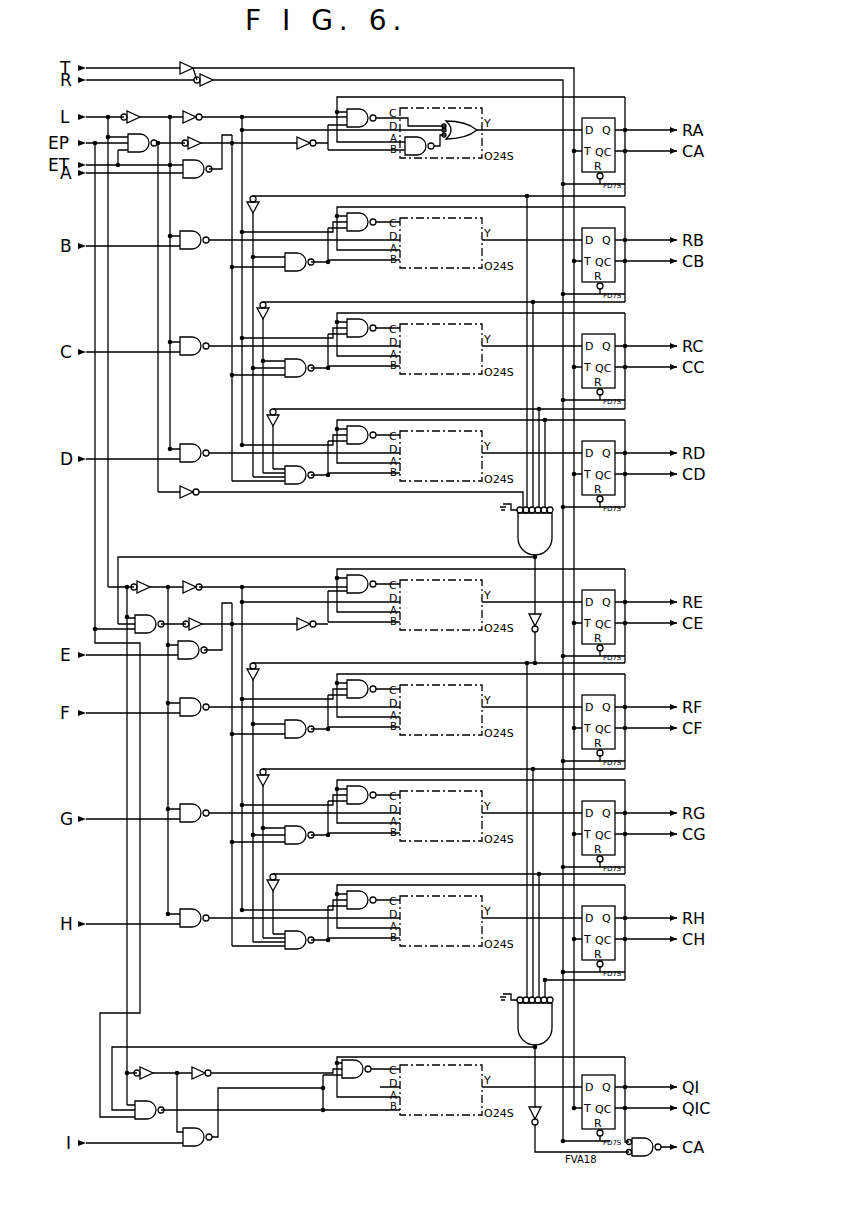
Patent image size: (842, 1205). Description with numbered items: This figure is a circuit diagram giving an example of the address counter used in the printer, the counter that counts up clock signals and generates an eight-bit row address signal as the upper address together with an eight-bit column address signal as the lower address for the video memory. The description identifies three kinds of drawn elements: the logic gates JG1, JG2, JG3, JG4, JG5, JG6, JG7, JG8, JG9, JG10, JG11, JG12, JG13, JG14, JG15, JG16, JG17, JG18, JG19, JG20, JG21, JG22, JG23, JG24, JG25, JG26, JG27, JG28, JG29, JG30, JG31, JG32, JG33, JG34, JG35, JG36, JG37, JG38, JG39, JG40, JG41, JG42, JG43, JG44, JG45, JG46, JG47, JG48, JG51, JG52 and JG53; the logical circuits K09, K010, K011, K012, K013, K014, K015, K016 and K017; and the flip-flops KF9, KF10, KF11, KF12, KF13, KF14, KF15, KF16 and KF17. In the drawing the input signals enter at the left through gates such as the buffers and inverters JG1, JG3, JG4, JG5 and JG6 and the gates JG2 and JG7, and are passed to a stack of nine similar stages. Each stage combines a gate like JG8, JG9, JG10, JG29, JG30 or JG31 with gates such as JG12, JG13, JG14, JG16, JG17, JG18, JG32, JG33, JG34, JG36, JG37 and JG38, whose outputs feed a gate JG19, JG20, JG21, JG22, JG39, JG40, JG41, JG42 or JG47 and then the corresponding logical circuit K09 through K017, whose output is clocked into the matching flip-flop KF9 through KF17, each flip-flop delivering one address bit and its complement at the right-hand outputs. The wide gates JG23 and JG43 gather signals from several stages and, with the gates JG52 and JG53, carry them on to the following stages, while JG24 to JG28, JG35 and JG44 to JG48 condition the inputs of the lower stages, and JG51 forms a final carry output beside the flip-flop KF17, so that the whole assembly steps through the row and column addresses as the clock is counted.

The logic gate JG1 is at (141, 113).
The logic gate JG2 is at (140, 144).
The logic gate JG3 is at (181, 61).
The logic gate JG4 is at (212, 80).
The logic gate JG5 is at (196, 113).
The logic gate JG6 is at (201, 139).
The logic gate JG7 is at (205, 163).
The logic gate JG8 is at (193, 240).
The logic gate JG9 is at (193, 346).
The logic gate JG10 is at (192, 453).
The logic gate JG11 is at (340, 490).
The logic gate JG12 is at (258, 199).
The logic gate JG13 is at (268, 305).
The logic gate JG14 is at (278, 412).
The logic gate JG15 is at (301, 142).
The logic gate JG16 is at (297, 264).
The logic gate JG17 is at (297, 370).
The logic gate JG18 is at (297, 477).
The logic gate JG19 is at (395, 118).
The logic gate JG20 is at (362, 222).
The logic gate JG21 is at (362, 328).
The logic gate JG22 is at (362, 435).
The logic gate JG23 is at (340, 564).
The logic gate JG24 is at (140, 580).
The logic gate JG25 is at (147, 623).
The logic gate JG26 is at (188, 580).
The logic gate JG27 is at (200, 619).
The logic gate JG28 is at (191, 652).
The logic gate JG29 is at (192, 707).
The logic gate JG30 is at (192, 813).
The logic gate JG31 is at (192, 918).
The logic gate JG32 is at (258, 666).
The logic gate JG33 is at (268, 772).
The logic gate JG34 is at (278, 877).
The logic gate JG35 is at (303, 623).
The logic gate JG36 is at (297, 731).
The logic gate JG37 is at (297, 837).
The logic gate JG38 is at (297, 942).
The logic gate JG39 is at (362, 584).
The logic gate JG40 is at (362, 689).
The logic gate JG41 is at (362, 795).
The logic gate JG42 is at (362, 900).
The logic gate JG43 is at (332, 1049).
The logic gate JG44 is at (148, 1069).
The logic gate JG45 is at (148, 1110).
The logic gate JG46 is at (207, 1071).
The logic gate JG47 is at (358, 1069).
The logic gate JG48 is at (200, 1138).
The logic gate JG51 is at (645, 1146).
The logic gate JG52 is at (521, 622).
The logic gate JG53 is at (523, 1115).
The logical circuit K09 is at (451, 129).
The logical circuit K010 is at (451, 239).
The logical circuit K011 is at (451, 345).
The logical circuit K012 is at (451, 452).
The logical circuit K013 is at (451, 601).
The logical circuit K014 is at (451, 706).
The logical circuit K015 is at (451, 812).
The logical circuit K016 is at (451, 917).
The logical circuit K017 is at (451, 1086).
The flip-flop KF9 is at (602, 147).
The flip-flop KF10 is at (602, 257).
The flip-flop KF11 is at (602, 363).
The flip-flop KF12 is at (602, 470).
The flip-flop KF13 is at (602, 619).
The flip-flop KF14 is at (602, 724).
The flip-flop KF15 is at (602, 830).
The flip-flop KF16 is at (602, 935).
The flip-flop KF17 is at (602, 1104).